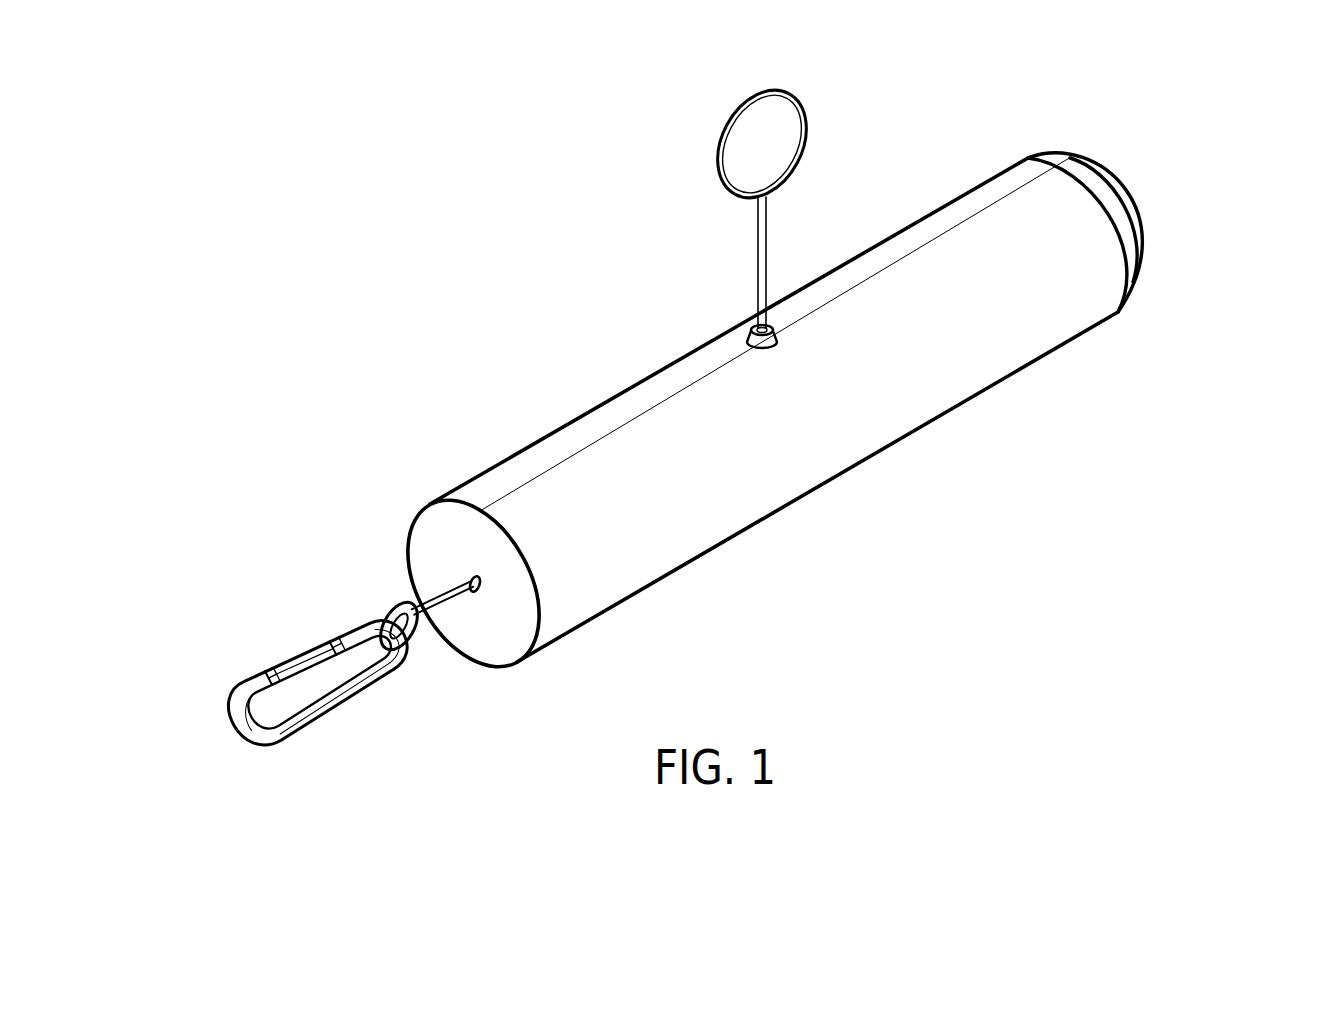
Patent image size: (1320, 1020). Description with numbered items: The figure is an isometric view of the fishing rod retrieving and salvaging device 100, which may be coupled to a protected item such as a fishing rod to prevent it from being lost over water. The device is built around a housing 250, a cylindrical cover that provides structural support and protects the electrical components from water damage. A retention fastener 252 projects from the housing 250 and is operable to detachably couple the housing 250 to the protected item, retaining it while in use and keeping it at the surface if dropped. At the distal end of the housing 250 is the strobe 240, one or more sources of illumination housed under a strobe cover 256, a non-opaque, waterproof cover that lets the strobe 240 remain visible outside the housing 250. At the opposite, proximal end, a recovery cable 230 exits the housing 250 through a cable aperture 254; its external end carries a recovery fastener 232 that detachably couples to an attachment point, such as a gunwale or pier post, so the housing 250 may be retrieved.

The fishing rod retrieving and salvaging device 100 is at (230, 182).
The recovery cable 230 is at (470, 662).
The recovery fastener 232 is at (240, 702).
The strobe 240 is at (1134, 238).
The housing 250 is at (572, 424).
The retention fastener 252 is at (765, 231).
The cable aperture 254 is at (410, 530).
The strobe cover 256 is at (1134, 200).